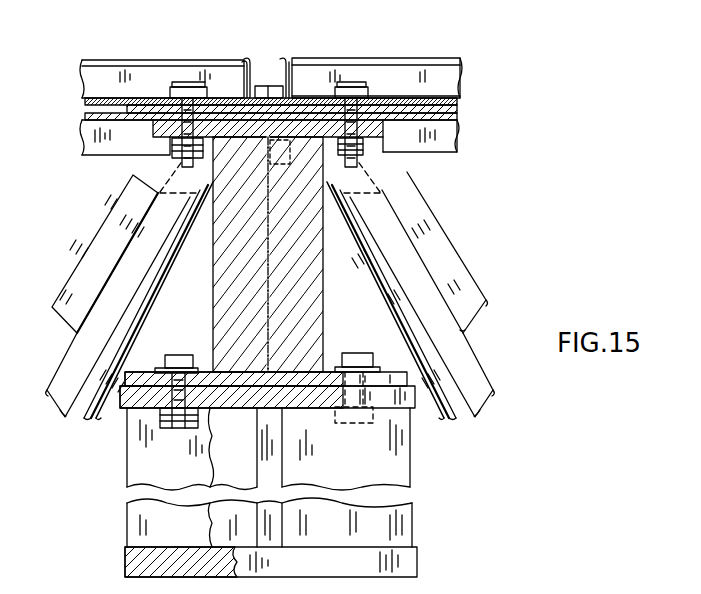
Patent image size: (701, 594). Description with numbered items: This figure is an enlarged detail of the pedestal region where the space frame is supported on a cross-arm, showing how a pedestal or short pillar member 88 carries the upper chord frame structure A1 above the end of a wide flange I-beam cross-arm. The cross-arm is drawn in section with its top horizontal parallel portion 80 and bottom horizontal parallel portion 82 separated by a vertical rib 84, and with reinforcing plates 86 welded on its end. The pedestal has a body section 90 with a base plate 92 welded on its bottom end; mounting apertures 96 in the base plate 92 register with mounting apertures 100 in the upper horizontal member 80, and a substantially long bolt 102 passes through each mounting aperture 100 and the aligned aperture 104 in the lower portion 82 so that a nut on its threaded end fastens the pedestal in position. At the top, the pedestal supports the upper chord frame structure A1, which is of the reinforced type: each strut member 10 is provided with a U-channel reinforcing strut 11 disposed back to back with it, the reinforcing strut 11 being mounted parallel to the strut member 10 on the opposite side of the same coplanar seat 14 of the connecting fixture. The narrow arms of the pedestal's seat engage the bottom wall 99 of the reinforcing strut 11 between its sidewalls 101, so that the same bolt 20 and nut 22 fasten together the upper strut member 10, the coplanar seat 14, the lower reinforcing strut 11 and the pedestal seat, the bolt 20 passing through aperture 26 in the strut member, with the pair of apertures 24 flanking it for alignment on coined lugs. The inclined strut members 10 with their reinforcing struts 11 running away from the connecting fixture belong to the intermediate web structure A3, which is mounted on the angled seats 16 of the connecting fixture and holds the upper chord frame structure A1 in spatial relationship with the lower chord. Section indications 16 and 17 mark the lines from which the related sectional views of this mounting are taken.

The strut member 10 is at (162, 60).
The U-channel reinforcing strut 11 is at (448, 131).
The coplanar seat 14 is at (405, 99).
The angled seat 16 is at (70, 272).
The section line 17- 17 is at (213, 288).
The bolt 20 is at (195, 88).
The nut 22 is at (170, 151).
The aperture 24 is at (160, 87).
The aperture 26 is at (338, 88).
The top horizontal parallel portion 80 is at (281, 403).
The bottom horizontal parallel portion 82 is at (420, 562).
The vertical rib 84 is at (282, 458).
The reinforcing plate 86 is at (130, 447).
The pedestal or short pillar member 88 is at (216, 278).
The body section 90 is at (297, 248).
The base plate 92 is at (133, 372).
The mounting aperture 96 is at (130, 408).
The bottom wall 99 is at (460, 103).
The mounting aperture 100 is at (222, 398).
The sidewall 101 is at (448, 149).
The long bolt 102 is at (372, 356).
The aligned aperture 104 is at (203, 421).
The upper chord frame structure A1 is at (377, 52).
The intermediate web structure A3 is at (479, 364).